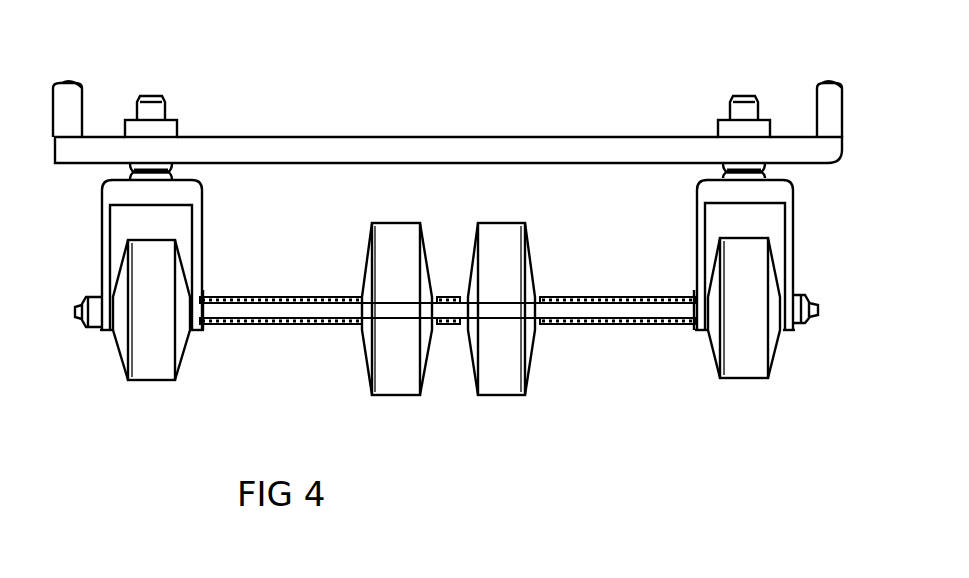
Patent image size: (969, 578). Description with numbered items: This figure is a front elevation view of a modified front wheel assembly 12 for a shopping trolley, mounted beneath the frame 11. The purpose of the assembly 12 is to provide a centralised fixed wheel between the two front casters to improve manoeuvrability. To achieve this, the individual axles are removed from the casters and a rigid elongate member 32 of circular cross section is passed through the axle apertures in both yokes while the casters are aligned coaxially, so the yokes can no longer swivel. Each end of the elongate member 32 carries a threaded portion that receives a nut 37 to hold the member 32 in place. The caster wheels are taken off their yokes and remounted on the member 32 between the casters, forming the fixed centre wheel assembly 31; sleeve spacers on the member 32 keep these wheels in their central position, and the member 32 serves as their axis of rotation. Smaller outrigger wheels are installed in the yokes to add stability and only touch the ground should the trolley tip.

The frame 11 is at (281, 150).
The front wheel assembly 12 is at (549, 104).
The fixed wheel assembly 31 is at (455, 424).
The rigid elongate member 32 is at (566, 318).
The nut 37 is at (86, 335).